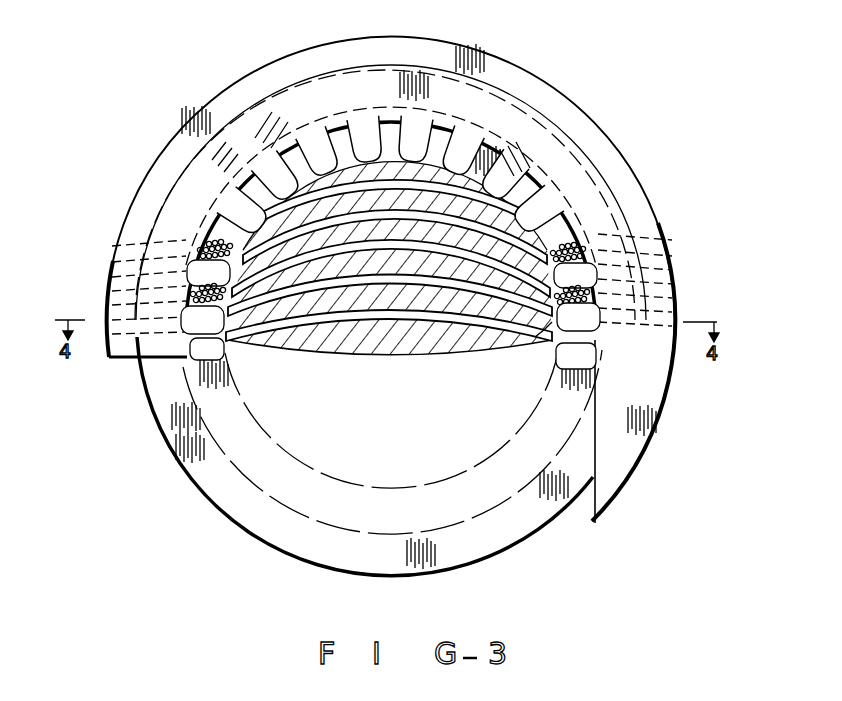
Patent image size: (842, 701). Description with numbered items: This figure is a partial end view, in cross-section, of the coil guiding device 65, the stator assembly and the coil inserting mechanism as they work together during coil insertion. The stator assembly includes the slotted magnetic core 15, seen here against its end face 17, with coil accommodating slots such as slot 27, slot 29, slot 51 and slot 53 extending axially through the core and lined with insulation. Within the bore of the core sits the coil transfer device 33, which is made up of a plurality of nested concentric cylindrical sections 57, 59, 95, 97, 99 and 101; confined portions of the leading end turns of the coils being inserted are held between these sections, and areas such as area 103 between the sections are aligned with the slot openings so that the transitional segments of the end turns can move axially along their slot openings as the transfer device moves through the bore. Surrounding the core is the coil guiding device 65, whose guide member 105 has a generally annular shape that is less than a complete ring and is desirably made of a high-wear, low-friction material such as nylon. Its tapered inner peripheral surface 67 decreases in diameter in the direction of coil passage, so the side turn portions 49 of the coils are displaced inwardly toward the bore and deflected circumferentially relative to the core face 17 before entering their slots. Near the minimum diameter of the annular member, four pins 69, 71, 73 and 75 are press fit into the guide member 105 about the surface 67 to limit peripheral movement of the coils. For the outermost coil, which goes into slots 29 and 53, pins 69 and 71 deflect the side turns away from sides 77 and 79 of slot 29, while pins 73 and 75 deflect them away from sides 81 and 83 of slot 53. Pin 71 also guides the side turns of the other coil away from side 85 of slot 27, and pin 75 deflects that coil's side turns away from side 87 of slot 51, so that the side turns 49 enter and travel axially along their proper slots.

The magnetic core 15 is at (322, 566).
The end face 17 is at (252, 512).
The slot 27 is at (165, 235).
The slot 29 is at (190, 297).
The coil transfer device 33 is at (442, 112).
The side turn portions 49 is at (200, 180).
The slot 51 is at (590, 227).
The slot 53 is at (590, 305).
The cylindrical section 57 is at (350, 300).
The cylindrical section 59 is at (398, 338).
The coil guiding device 65 is at (630, 474).
The tapered inner peripheral surface 67 is at (570, 151).
The pin 69 is at (192, 340).
The pin 71 is at (188, 266).
The pin 73 is at (600, 341).
The pin 75 is at (590, 260).
The side of slot 77 is at (230, 338).
The side of slot 79 is at (185, 283).
The side of slot 81 is at (540, 337).
The side of slot 83 is at (590, 270).
The side of slot 85 is at (200, 245).
The side of slot 87 is at (590, 257).
The cylindrical section 95 is at (280, 252).
The cylindrical section 97 is at (302, 212).
The cylindrical section 99 is at (347, 190).
The cylindrical section 101 is at (382, 168).
The area between cylindrical sections 103 is at (322, 327).
The guide member 105 is at (643, 437).